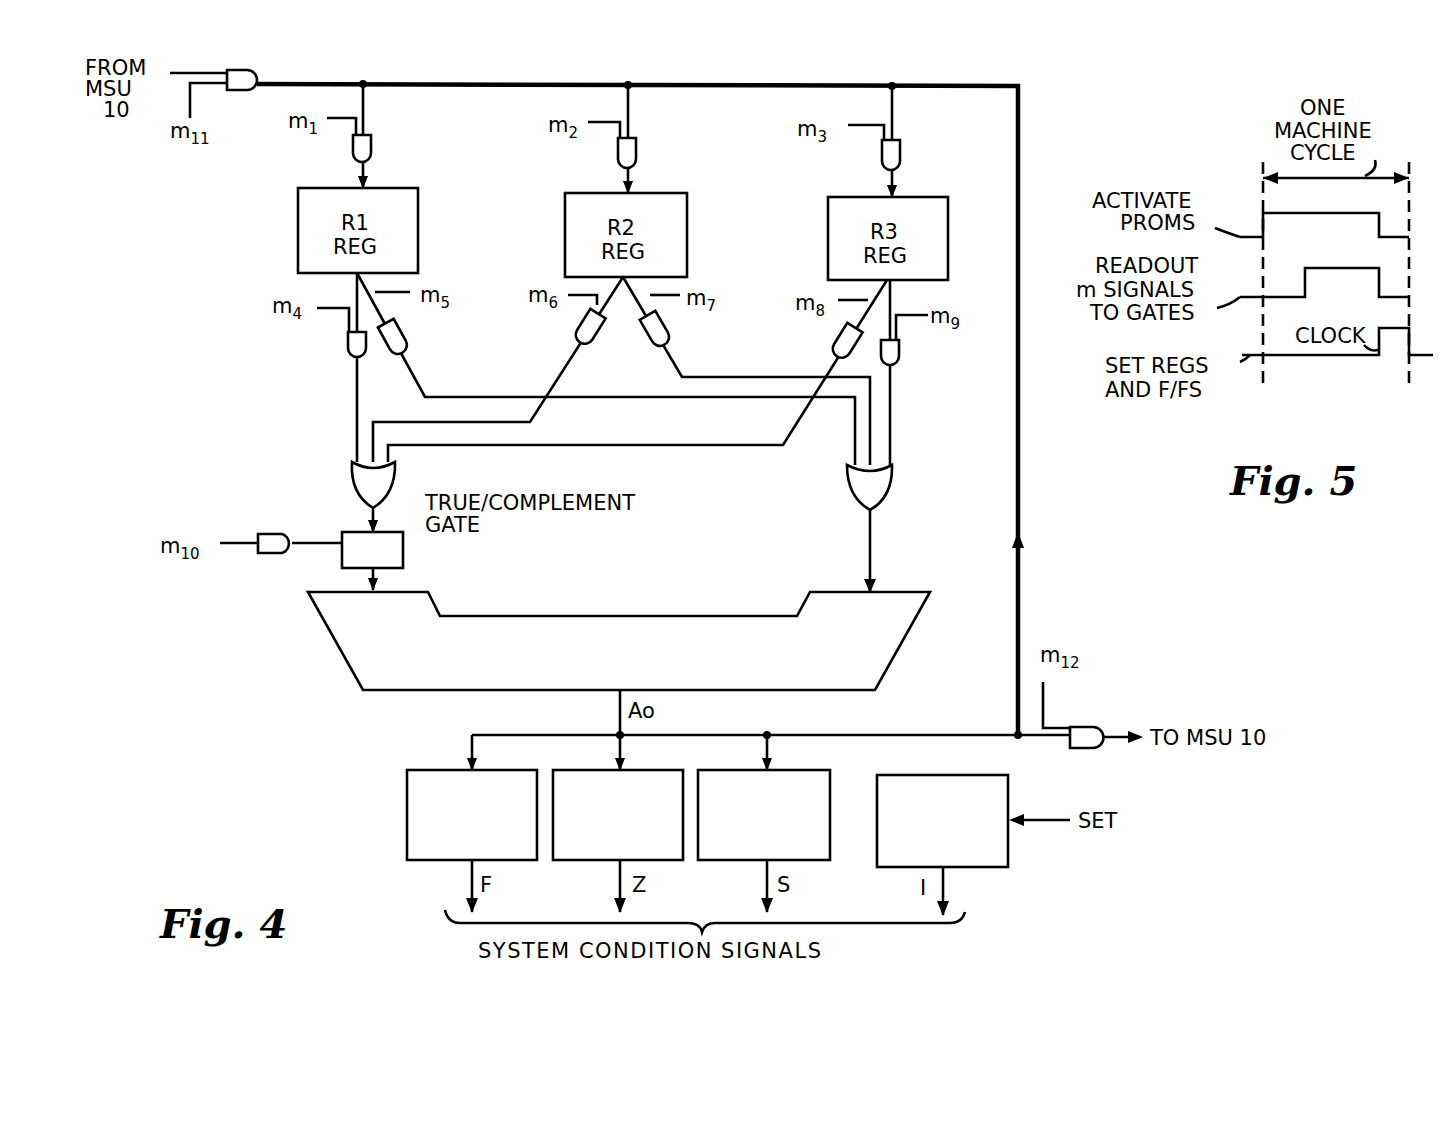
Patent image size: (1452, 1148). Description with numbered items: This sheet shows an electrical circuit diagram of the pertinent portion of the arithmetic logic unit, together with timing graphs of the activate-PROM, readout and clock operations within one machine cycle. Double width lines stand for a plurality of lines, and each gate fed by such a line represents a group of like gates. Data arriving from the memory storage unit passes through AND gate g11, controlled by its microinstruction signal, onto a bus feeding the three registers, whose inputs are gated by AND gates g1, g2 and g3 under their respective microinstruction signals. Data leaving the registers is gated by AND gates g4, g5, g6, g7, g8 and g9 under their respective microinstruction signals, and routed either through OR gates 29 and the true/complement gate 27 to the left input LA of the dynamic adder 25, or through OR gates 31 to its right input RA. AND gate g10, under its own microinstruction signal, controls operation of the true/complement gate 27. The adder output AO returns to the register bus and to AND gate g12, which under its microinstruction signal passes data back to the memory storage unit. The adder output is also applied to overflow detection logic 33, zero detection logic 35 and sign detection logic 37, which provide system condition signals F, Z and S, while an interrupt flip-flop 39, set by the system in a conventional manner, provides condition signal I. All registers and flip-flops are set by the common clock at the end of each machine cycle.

The dynamic adder 25 is at (898, 652).
The true/complement gate 27 is at (403, 558).
The OR gates 29 is at (352, 466).
The OR gates 31 is at (892, 468).
The overflow detection logic 33 is at (514, 752).
The zero detection logic 35 is at (654, 752).
The sign detection logic 37 is at (806, 752).
The interrupt flip-flop 39 is at (972, 775).
The AND gate g1 is at (371, 158).
The AND gate g2 is at (636, 152).
The AND gate g3 is at (900, 158).
The AND gate g4 is at (348, 340).
The AND gate g5 is at (405, 330).
The AND gate g6 is at (578, 330).
The AND gate g7 is at (668, 328).
The AND gate g8 is at (835, 342).
The AND gate g9 is at (899, 356).
The AND gate g10 is at (278, 518).
The AND gate g11 is at (258, 75).
The AND gate g12 is at (1078, 727).